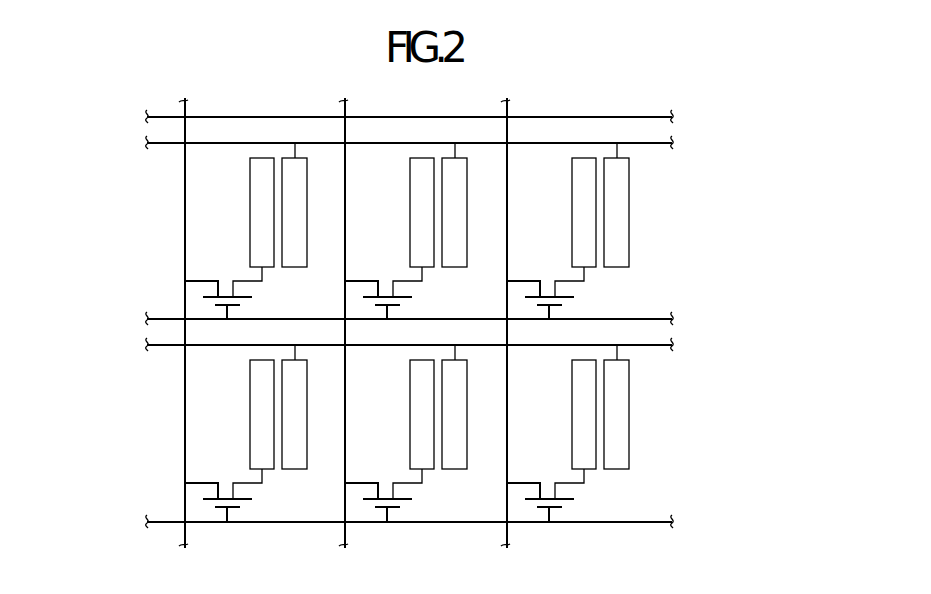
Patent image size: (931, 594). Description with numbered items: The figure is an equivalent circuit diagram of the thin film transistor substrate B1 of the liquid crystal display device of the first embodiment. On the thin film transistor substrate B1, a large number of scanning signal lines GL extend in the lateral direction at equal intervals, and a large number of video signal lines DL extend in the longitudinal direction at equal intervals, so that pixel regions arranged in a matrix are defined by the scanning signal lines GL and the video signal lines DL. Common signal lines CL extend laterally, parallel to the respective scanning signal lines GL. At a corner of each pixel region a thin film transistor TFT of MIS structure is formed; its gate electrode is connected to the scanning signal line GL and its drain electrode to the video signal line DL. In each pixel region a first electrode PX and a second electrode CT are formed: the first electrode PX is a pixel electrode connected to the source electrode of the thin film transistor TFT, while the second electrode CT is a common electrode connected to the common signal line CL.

The scanning signal line GL is at (655, 117).
The common signal line CL is at (166, 143).
The video signal line DL is at (180, 542).
The first electrode PX is at (258, 178).
The second electrode CT is at (295, 268).
The thin film transistor TFT is at (226, 262).
The thin film transistor substrate B1 is at (748, 190).